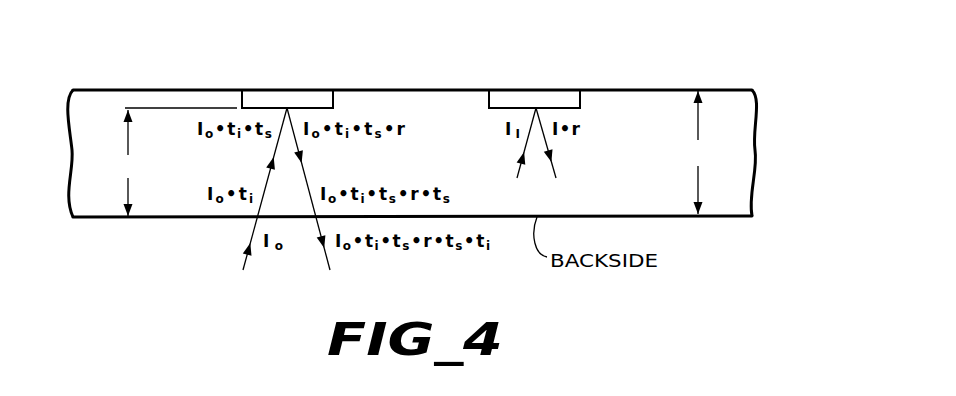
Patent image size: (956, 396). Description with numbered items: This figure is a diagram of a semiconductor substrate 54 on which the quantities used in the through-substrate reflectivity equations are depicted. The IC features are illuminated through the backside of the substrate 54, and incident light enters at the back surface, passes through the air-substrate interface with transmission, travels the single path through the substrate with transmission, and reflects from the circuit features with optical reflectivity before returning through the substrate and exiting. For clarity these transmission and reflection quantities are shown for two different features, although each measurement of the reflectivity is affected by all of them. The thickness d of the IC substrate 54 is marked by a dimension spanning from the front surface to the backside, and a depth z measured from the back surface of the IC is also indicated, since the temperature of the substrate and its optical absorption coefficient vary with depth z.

The substrate 54 is at (637, 128).
The depth z is at (180, 162).
The thickness d is at (698, 152).